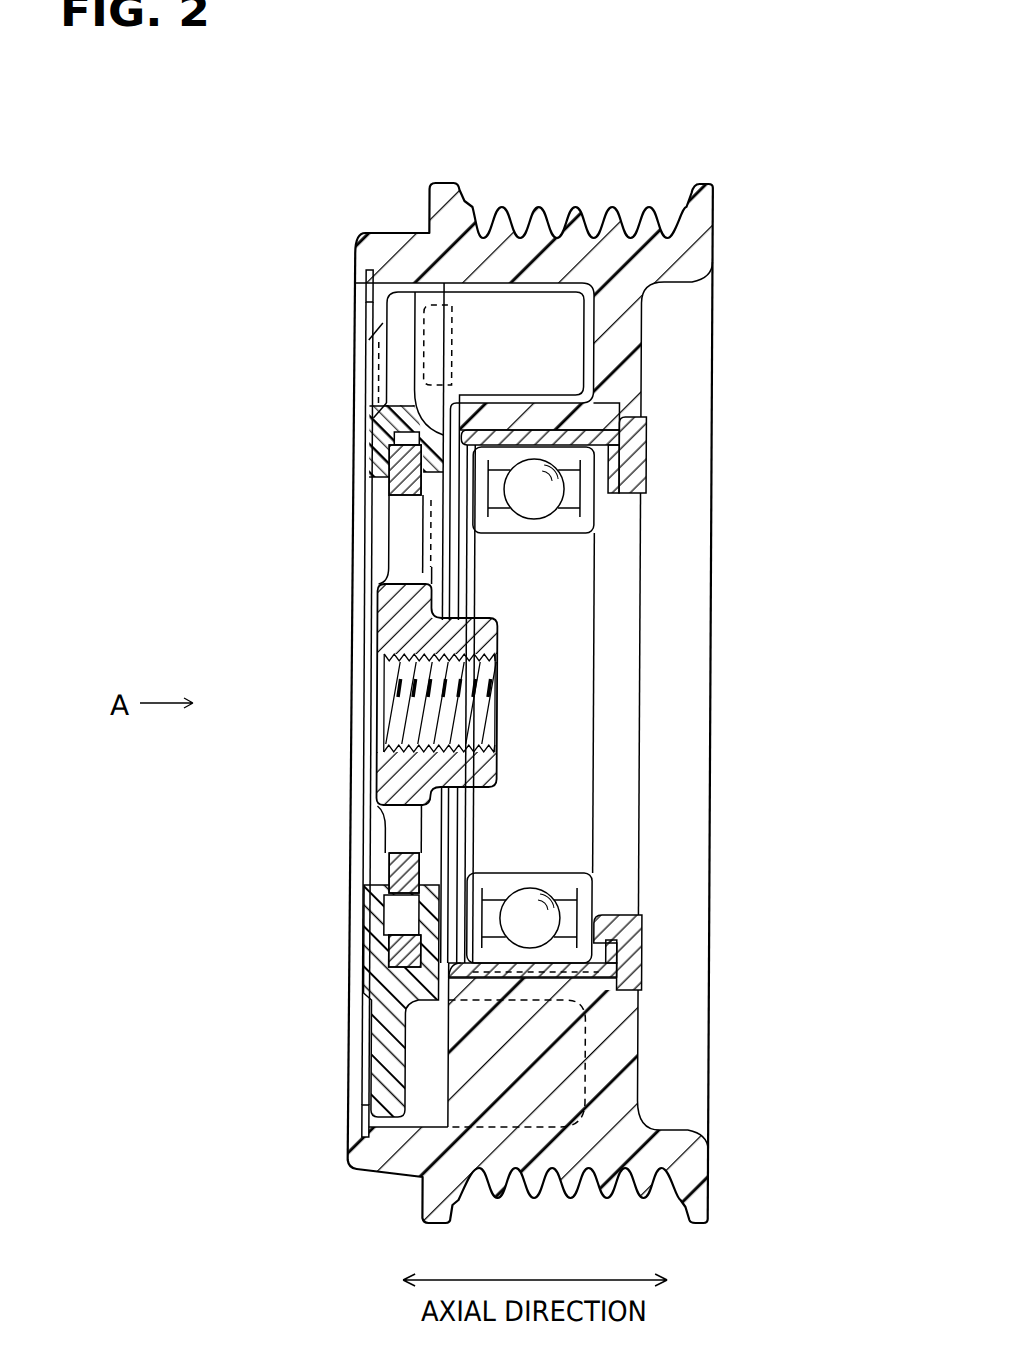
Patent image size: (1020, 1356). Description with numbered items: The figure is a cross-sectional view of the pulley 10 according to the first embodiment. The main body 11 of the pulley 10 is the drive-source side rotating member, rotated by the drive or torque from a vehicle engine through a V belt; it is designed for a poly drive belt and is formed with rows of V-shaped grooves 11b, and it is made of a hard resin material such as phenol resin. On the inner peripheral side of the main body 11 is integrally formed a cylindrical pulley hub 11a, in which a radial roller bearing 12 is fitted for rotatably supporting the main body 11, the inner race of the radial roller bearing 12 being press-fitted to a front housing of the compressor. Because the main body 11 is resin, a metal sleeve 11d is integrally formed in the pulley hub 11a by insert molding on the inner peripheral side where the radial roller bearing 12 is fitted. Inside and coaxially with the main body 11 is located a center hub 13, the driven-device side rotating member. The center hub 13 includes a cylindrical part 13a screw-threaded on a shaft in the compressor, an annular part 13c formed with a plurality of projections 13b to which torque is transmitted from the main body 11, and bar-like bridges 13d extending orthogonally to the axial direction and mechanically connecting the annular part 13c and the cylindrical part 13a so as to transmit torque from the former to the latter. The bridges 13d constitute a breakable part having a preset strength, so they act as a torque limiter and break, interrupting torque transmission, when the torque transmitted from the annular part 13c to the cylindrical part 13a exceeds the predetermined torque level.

The pulley 10 is at (614, 201).
The main body 11 is at (424, 236).
The pulley hub 11a is at (532, 416).
The V-shaped grooves 11b is at (547, 218).
The metal sleeve 11d is at (633, 467).
The radial roller bearing 12 is at (590, 502).
The center hub 13 is at (374, 625).
The cylindrical part 13a is at (487, 620).
The projections 13b is at (500, 318).
The annular part 13c is at (376, 416).
The bridges 13d is at (384, 862).